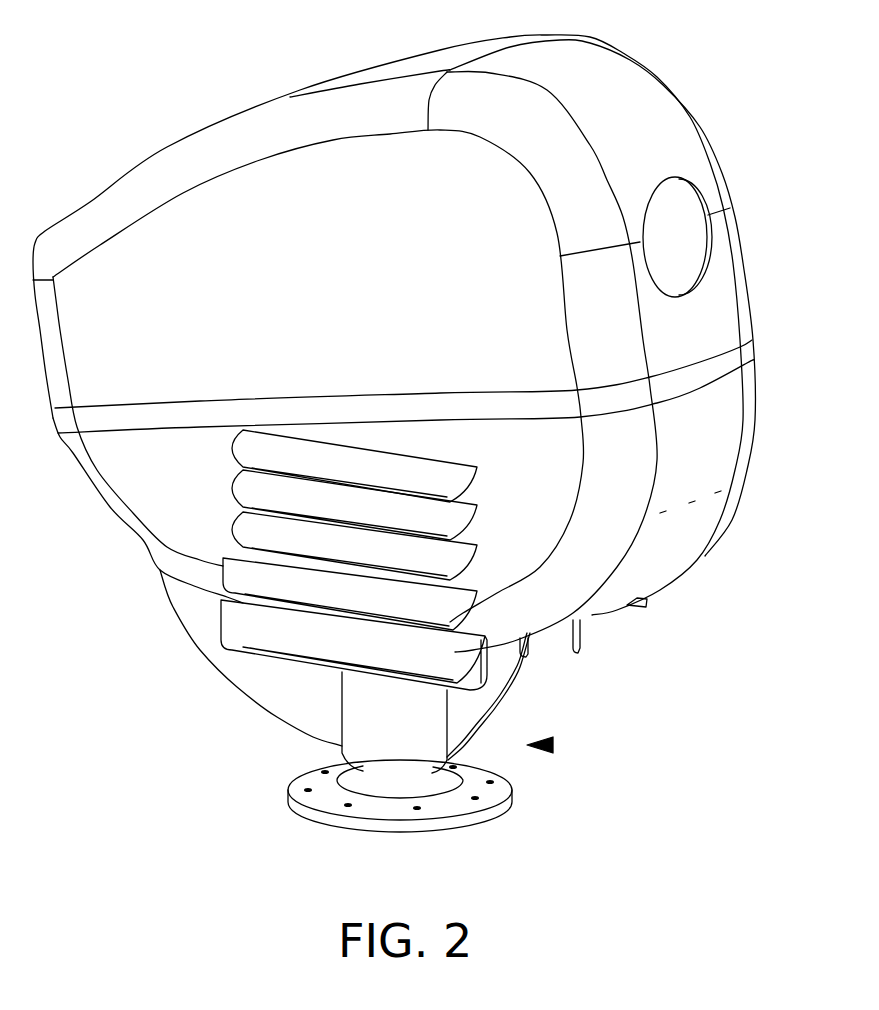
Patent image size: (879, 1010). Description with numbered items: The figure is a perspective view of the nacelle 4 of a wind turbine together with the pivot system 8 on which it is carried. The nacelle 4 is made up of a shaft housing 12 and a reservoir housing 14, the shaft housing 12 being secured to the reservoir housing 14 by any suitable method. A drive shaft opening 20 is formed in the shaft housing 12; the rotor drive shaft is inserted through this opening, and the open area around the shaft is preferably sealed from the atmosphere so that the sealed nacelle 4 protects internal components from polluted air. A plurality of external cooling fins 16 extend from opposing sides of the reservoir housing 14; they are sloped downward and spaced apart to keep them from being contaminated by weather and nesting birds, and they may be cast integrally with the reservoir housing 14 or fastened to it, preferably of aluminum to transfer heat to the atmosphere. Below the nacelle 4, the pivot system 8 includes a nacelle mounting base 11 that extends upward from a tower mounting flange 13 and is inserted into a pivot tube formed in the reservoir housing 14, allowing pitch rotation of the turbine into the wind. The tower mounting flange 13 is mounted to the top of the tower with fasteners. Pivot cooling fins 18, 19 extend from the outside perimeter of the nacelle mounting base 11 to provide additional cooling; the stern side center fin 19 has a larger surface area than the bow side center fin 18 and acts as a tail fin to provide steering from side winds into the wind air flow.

The nacelle 4 is at (657, 115).
The pivot system 8 is at (553, 745).
The nacelle mounting base 11 is at (357, 745).
The shaft housing 12 is at (190, 227).
The tower mounting flange 13 is at (488, 790).
The reservoir housing 14 is at (717, 475).
The external cooling fins 16 is at (240, 447).
The bow side center fin 18 is at (472, 712).
The stern side center fin 19 is at (270, 693).
The drive shaft opening 20 is at (690, 260).